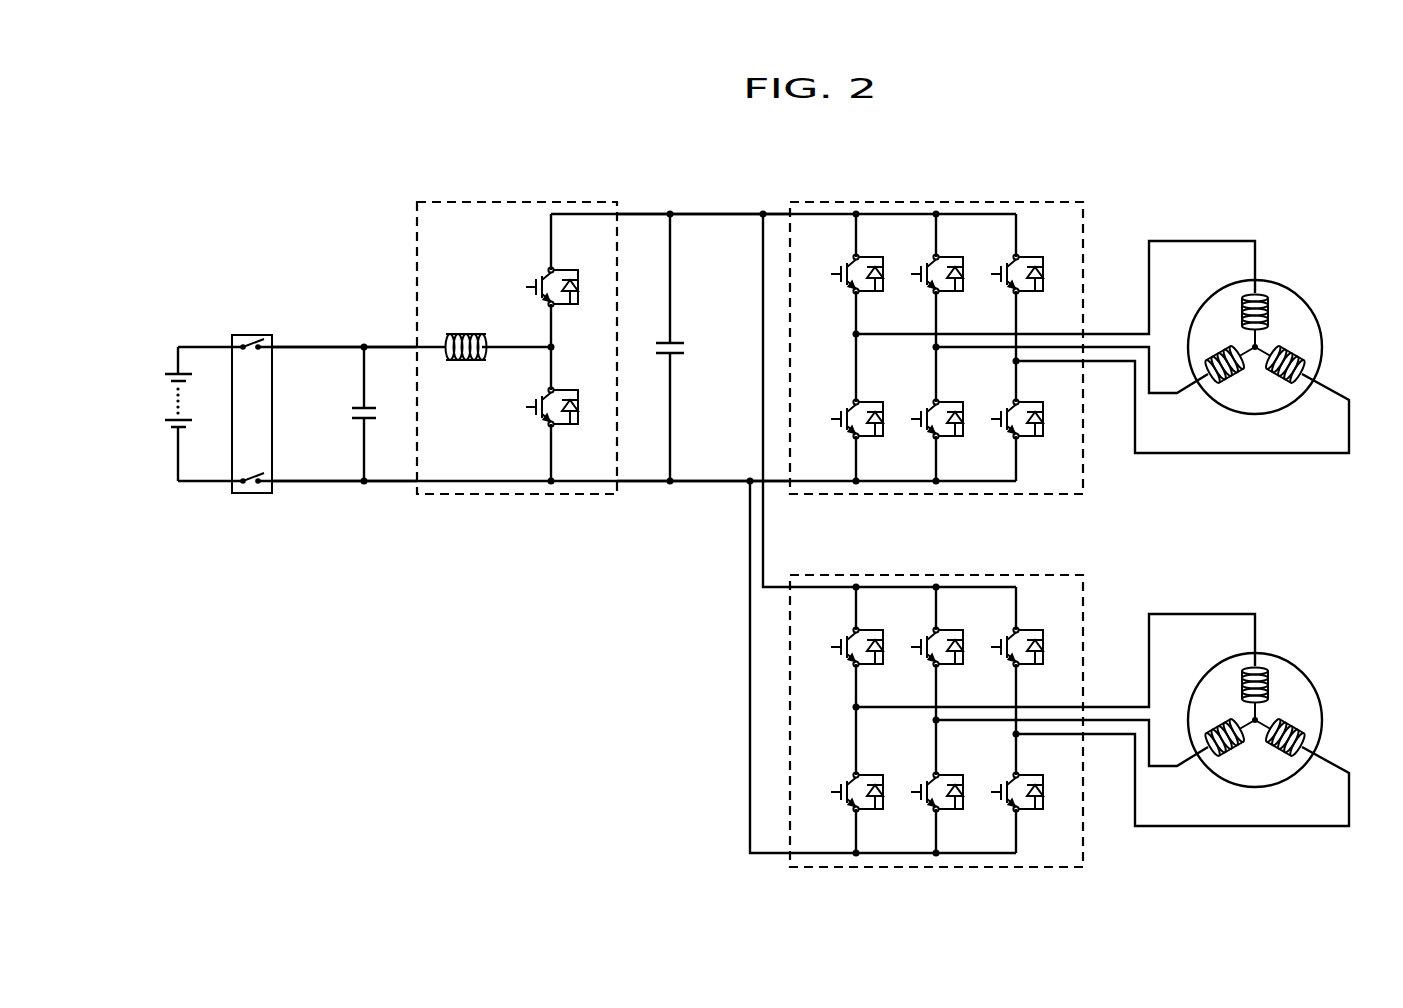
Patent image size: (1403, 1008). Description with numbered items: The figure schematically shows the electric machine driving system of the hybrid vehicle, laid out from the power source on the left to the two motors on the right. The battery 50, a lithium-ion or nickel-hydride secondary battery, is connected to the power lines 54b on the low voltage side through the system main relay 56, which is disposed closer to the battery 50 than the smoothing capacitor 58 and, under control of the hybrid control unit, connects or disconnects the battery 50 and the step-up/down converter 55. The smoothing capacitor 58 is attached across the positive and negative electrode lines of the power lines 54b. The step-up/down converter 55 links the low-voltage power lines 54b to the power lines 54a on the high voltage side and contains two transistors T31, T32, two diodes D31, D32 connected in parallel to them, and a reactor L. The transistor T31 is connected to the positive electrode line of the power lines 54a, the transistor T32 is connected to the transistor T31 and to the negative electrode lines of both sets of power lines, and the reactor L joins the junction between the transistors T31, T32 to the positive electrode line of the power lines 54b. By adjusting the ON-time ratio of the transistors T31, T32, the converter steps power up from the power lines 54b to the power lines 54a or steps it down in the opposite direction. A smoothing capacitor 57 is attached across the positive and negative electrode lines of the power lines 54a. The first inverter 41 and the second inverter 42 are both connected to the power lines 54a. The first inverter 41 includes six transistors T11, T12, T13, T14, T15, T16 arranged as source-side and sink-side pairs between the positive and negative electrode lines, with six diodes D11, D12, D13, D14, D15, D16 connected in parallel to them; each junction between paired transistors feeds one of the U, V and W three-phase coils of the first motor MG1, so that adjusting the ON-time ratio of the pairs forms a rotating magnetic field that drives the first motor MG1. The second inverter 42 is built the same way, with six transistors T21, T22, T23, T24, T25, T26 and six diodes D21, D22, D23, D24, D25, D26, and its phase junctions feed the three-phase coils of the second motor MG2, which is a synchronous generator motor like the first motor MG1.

The battery 50 is at (176, 347).
The system main relay 56 is at (250, 334).
The power lines on a low voltage side 54b is at (325, 352).
The smoothing capacitor 58 is at (372, 406).
The step-up/down converter 55 is at (512, 200).
The reactor L is at (462, 335).
The transistor T31 is at (529, 284).
The transistor T32 is at (529, 404).
The diode D31 is at (572, 296).
The diode D32 is at (572, 416).
The smoothing capacitor 57 is at (676, 342).
The power lines on a high voltage side 54a is at (737, 214).
The first inverter 41 is at (937, 200).
The transistor T11 is at (834, 271).
The transistor T12 is at (914, 271).
The transistor T13 is at (994, 271).
The transistor T14 is at (834, 416).
The transistor T15 is at (914, 416).
The transistor T16 is at (994, 416).
The diode D11 is at (877, 283).
The diode D12 is at (957, 283).
The diode D13 is at (1037, 283).
The diode D14 is at (877, 428).
The diode D15 is at (957, 428).
The diode D16 is at (1037, 428).
The first motor MG1 is at (1287, 285).
The second inverter 42 is at (937, 573).
The transistor T21 is at (834, 644).
The transistor T22 is at (914, 644).
The transistor T23 is at (994, 644).
The transistor T24 is at (834, 789).
The transistor T25 is at (914, 789).
The transistor T26 is at (994, 789).
The diode D21 is at (877, 656).
The diode D22 is at (957, 656).
The diode D23 is at (1037, 656).
The diode D24 is at (877, 801).
The diode D25 is at (957, 801).
The diode D26 is at (1037, 801).
The second motor MG2 is at (1287, 658).